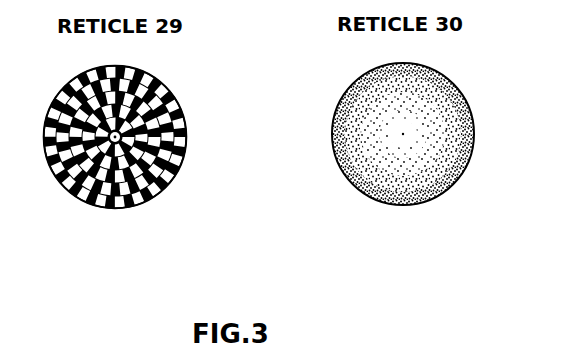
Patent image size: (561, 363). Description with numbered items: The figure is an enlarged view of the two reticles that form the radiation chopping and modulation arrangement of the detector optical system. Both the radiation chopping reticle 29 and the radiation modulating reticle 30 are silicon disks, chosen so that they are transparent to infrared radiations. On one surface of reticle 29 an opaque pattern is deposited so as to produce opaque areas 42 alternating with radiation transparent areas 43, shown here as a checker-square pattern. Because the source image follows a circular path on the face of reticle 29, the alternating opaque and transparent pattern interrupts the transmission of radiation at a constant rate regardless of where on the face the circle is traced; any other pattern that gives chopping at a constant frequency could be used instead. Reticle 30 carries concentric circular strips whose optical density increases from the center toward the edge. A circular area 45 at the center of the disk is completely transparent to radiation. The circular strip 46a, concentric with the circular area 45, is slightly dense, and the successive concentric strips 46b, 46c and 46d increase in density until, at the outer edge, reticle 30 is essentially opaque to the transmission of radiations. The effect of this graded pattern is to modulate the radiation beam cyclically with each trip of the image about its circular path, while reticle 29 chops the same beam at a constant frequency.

The radiation chopping reticle 29 is at (64, 92).
The radiation modulating reticle 30 is at (357, 88).
The opaque areas 42 is at (182, 163).
The radiation transparent areas 43 is at (183, 136).
The circular area 45 is at (453, 183).
The circular strip 46a is at (426, 122).
The circular strip 46b is at (437, 132).
The circular strip 46c is at (448, 141).
The circular strip 46d is at (412, 140).